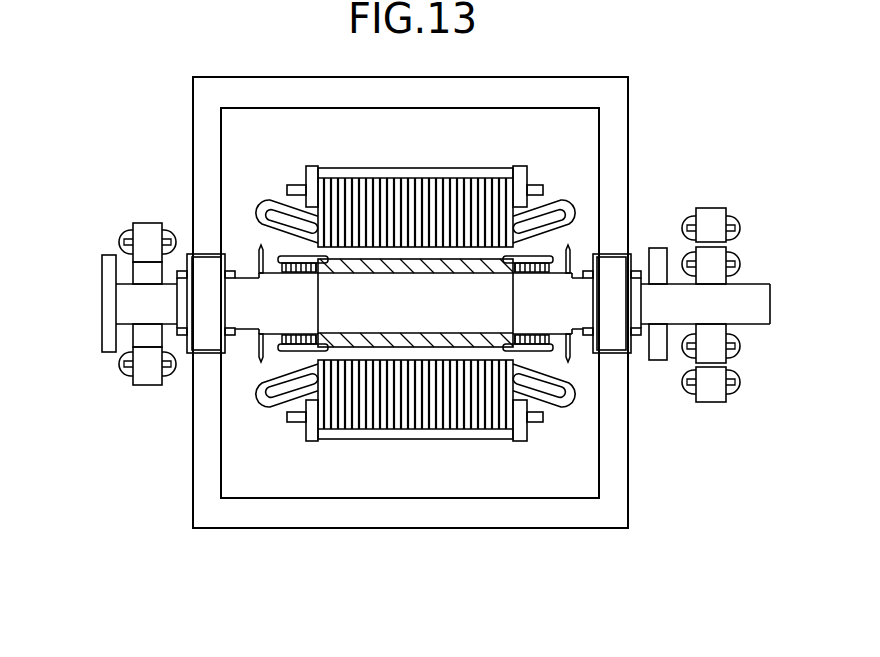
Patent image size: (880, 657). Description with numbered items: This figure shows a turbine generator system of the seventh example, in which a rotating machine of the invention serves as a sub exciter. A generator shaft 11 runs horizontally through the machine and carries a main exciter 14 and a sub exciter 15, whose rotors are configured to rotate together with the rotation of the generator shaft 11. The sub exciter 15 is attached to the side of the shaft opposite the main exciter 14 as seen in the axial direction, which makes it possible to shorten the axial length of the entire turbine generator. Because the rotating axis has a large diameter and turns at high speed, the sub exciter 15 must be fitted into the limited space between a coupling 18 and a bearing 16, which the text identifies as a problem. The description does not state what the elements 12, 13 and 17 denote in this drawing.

The generator shaft 11 is at (243, 322).
The housing 12 is at (498, 512).
The stator core 13 is at (415, 412).
The main exciter 14 is at (712, 218).
The sub exciter 15 is at (147, 373).
The bearing 16 is at (207, 265).
The plate member 17 is at (659, 350).
The coupling 18 is at (108, 302).